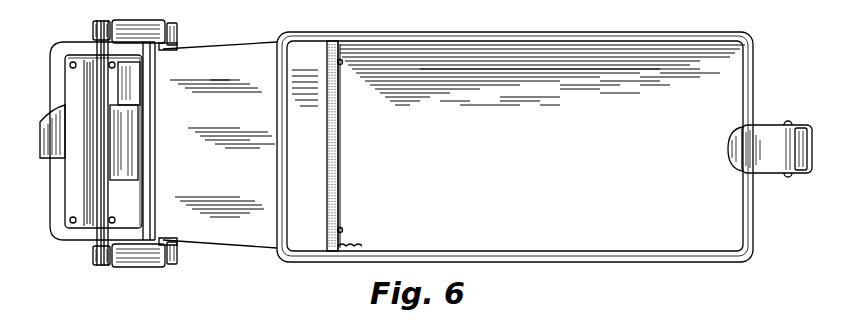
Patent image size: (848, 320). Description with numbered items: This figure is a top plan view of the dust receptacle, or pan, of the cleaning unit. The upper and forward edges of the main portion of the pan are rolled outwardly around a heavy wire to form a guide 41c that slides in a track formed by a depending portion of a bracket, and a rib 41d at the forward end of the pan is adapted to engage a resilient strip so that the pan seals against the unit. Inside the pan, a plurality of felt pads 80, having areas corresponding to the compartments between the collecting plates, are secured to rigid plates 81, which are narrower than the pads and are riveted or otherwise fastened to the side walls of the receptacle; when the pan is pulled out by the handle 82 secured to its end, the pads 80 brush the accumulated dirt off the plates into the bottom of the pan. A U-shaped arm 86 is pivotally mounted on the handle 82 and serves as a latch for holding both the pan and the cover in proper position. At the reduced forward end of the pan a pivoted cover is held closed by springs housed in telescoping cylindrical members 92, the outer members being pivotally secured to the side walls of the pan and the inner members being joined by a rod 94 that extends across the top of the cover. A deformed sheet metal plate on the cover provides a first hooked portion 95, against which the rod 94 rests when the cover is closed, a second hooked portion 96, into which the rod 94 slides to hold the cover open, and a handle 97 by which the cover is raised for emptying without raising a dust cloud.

The guide 41c is at (531, 39).
The rib 41d is at (283, 173).
The pad 80 is at (337, 134).
The rigid plate 81 is at (338, 106).
The handle 82 is at (807, 175).
The U-shaped arm 86 is at (770, 140).
The telescoping cylindrical member 92 is at (153, 24).
The rod 94 is at (97, 236).
The hooked portion 95 is at (95, 178).
The hooked portion 96 is at (128, 160).
The handle 97 is at (40, 148).